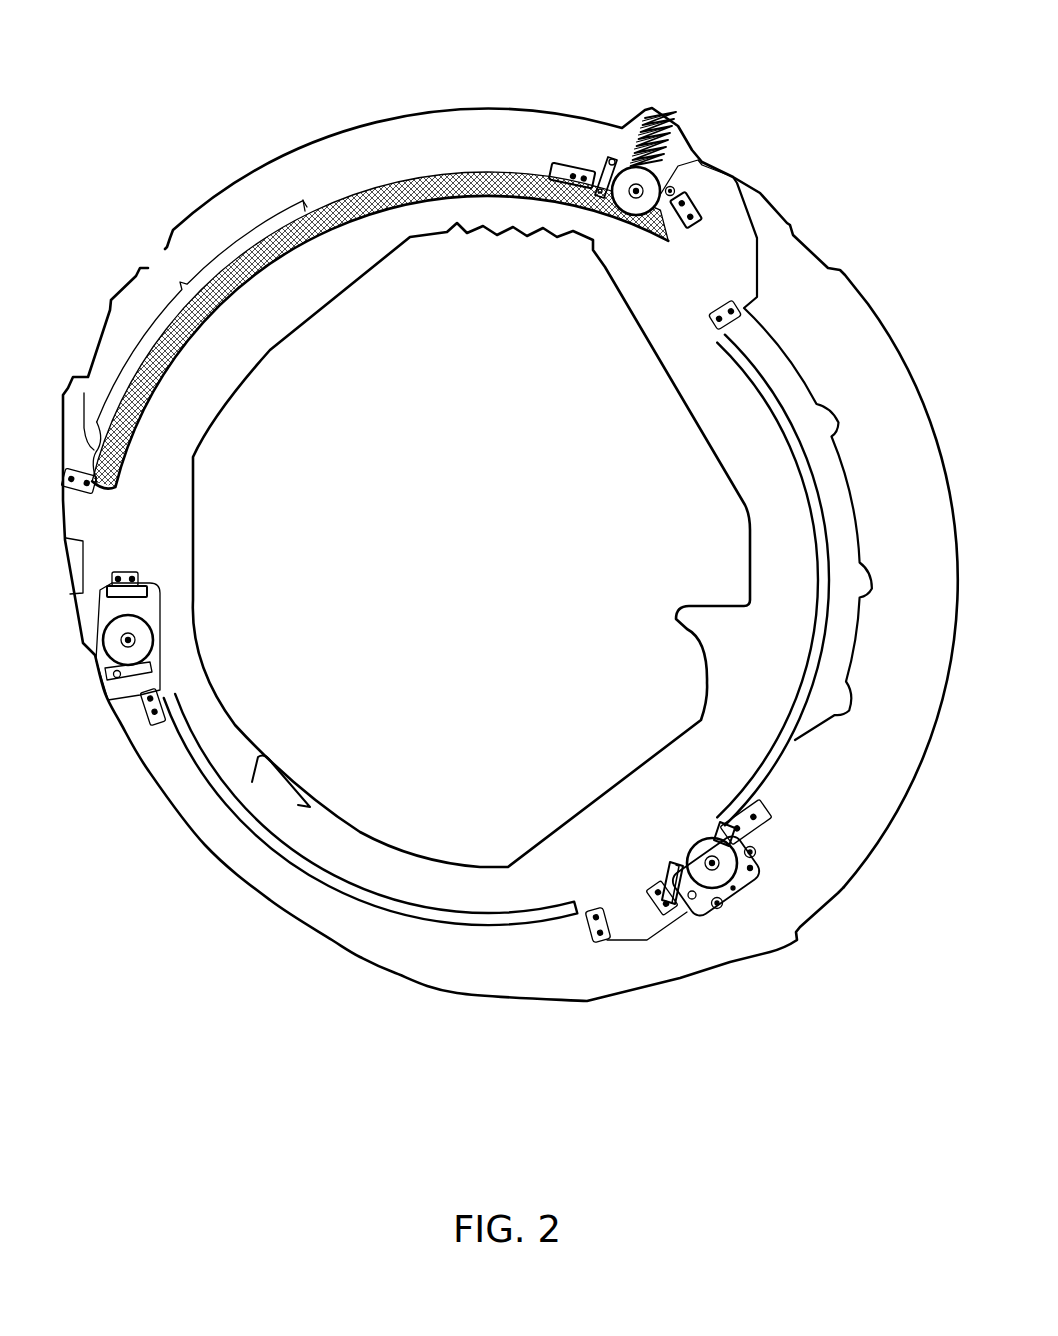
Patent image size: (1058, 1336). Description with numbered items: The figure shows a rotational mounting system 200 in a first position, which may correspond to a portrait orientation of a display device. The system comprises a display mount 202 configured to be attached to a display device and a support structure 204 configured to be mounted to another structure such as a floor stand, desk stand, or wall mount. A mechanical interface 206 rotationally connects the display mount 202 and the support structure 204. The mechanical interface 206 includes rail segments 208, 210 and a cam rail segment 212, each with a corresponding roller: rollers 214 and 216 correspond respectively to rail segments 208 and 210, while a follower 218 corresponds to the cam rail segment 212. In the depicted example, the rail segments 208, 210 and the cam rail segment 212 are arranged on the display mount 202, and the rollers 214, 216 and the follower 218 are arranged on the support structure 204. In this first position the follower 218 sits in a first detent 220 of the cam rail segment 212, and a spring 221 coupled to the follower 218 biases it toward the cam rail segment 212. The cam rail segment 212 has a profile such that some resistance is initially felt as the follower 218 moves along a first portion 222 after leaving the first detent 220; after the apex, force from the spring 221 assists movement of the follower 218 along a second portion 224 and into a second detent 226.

The rotational mounting system 200 is at (845, 63).
The display mount 202 is at (687, 406).
The support structure 204 is at (863, 297).
The mechanical interface 206 is at (687, 827).
The rail segment 208 is at (787, 456).
The rail segment 210 is at (253, 813).
The cam rail segment 212 is at (293, 217).
The roller 214 is at (755, 842).
The roller 216 is at (98, 672).
The follower 218 is at (695, 165).
The first detent 220 is at (626, 210).
The spring 221 is at (677, 112).
The first portion 222 is at (307, 207).
The second portion 224 is at (202, 311).
The second detent 226 is at (93, 449).